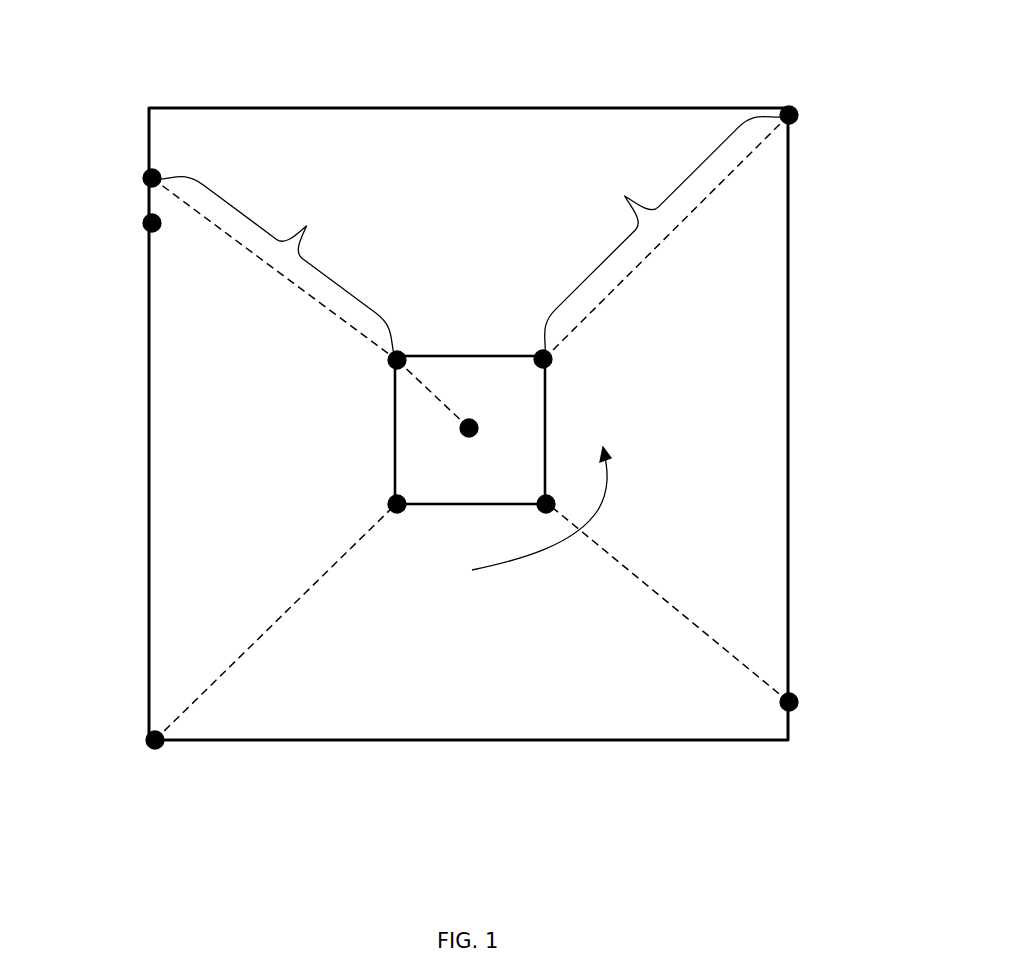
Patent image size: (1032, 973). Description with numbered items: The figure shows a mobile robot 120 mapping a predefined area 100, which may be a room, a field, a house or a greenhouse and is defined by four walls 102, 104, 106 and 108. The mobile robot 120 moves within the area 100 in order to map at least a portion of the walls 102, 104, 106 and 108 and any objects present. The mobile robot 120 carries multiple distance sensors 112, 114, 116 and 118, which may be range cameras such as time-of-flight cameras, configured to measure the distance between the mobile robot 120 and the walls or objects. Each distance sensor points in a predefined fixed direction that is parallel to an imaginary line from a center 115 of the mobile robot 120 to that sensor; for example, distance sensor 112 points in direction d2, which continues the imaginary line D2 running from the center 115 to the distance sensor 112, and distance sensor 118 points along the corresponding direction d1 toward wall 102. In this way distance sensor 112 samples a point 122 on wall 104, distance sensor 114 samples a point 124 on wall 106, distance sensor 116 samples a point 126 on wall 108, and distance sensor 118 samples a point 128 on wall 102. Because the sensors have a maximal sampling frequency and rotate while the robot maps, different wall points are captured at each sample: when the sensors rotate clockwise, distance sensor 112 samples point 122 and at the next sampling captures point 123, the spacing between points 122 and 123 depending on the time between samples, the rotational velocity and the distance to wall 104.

The area 100 is at (590, 102).
The wall 102 is at (388, 107).
The wall 104 is at (165, 418).
The wall 106 is at (531, 742).
The wall 108 is at (782, 410).
The distance sensor 112 is at (393, 363).
The distance sensor 114 is at (392, 512).
The center 115 is at (462, 427).
The distance sensor 116 is at (540, 512).
The distance sensor 118 is at (550, 368).
The mobile robot 120 is at (468, 376).
The point 122 is at (150, 176).
The point 123 is at (150, 222).
The point 124 is at (150, 741).
The point 126 is at (796, 703).
The point 128 is at (797, 117).
The distance d1 is at (664, 235).
The direction d2 is at (276, 265).
The imaginary line D2 is at (455, 375).